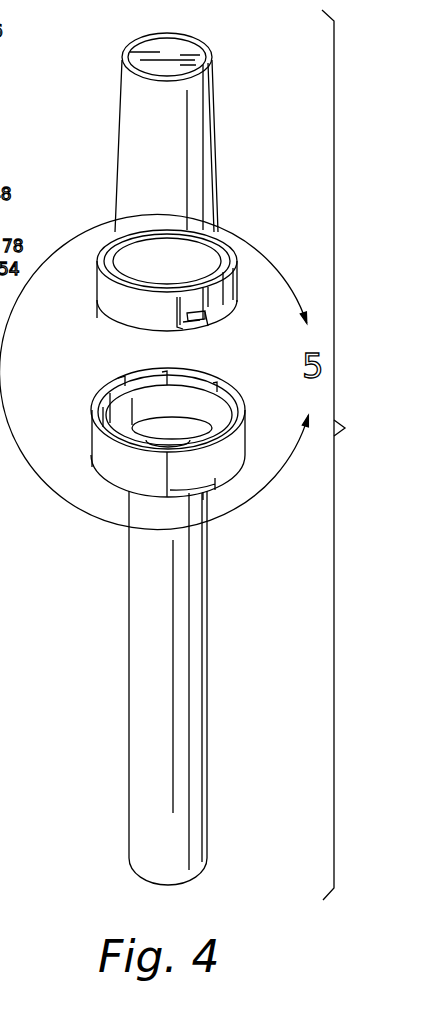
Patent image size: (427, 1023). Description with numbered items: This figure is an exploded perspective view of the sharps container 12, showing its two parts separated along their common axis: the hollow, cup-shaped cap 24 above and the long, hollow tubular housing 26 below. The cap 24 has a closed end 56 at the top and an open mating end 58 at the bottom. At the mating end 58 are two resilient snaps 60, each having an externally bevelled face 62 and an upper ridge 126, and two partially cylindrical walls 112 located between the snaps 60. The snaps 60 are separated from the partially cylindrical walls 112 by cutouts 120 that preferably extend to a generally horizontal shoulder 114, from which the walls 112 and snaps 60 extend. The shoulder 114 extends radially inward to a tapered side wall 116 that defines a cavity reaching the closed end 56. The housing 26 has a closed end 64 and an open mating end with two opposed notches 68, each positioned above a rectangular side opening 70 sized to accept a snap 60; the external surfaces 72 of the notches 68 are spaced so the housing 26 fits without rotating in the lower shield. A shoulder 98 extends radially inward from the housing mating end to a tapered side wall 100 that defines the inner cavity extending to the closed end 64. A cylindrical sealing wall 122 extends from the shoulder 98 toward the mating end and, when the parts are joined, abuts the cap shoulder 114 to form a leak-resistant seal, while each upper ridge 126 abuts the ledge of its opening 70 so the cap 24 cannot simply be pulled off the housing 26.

The sharps container 12 is at (342, 455).
The cap 24 is at (188, 185).
The housing 26 is at (203, 695).
The closed end 56 is at (170, 53).
The open mating end 58 is at (233, 306).
The resilient snaps 60 is at (208, 326).
The externally bevelled face 62 is at (190, 323).
The closed end 64 is at (200, 867).
The notches 68 is at (173, 450).
The rectangular side opening 70 is at (203, 492).
The external surfaces 72 is at (215, 485).
The shoulder 98 is at (170, 423).
The tapered side wall 100 is at (207, 636).
The partially cylindrical walls 112 is at (223, 280).
The shoulder 114 is at (227, 243).
The tapered side wall 116 is at (213, 120).
The cutouts 120 is at (178, 313).
The cylindrical sealing wall 122 is at (212, 392).
The upper ridge 126 is at (195, 318).